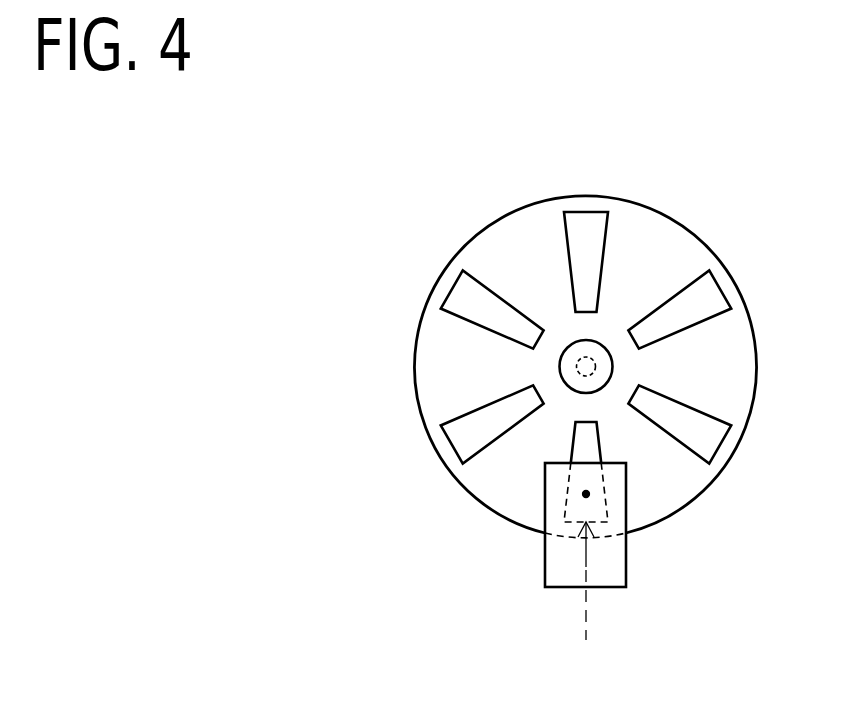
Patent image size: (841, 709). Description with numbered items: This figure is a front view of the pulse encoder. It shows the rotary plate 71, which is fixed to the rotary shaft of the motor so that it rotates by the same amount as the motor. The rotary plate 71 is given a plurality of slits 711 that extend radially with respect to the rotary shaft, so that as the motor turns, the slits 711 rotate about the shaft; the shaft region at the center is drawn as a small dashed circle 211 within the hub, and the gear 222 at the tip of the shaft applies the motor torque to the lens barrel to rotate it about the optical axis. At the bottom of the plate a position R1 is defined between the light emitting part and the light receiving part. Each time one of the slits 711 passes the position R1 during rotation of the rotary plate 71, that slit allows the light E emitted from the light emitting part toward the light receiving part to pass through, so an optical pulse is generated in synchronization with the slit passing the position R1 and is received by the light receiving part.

The rotary plate 71 is at (684, 222).
The slits 711 is at (586, 235).
The gear 222 is at (559, 364).
The shaft 211 is at (596, 366).
The light E is at (590, 494).
The position R1 is at (586, 602).